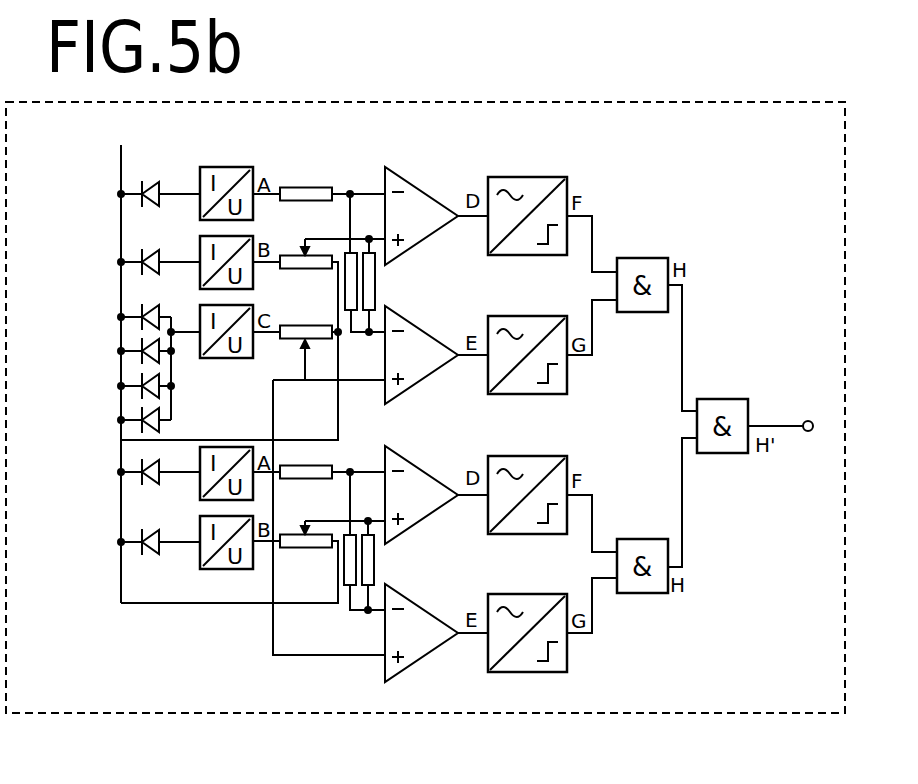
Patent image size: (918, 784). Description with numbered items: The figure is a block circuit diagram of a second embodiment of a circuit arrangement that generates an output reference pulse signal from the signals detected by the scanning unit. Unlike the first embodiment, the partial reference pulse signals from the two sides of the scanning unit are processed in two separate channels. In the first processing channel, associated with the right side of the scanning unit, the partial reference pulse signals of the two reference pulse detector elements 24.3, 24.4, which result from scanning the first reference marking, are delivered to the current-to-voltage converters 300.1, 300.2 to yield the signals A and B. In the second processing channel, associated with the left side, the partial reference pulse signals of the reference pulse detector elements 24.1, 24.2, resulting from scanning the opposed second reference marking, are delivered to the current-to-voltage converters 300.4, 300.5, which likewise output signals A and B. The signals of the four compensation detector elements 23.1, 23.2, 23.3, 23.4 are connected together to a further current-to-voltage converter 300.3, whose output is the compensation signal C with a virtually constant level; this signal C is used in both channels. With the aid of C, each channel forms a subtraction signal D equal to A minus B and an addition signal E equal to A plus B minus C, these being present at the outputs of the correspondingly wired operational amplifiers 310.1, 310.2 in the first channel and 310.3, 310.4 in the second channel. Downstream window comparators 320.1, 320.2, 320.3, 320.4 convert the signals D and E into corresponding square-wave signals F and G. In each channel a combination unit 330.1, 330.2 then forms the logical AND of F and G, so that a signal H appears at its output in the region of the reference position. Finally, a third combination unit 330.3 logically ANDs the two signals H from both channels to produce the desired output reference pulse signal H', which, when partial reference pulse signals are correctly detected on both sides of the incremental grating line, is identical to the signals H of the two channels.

The compensation detector element 23.1 is at (141, 430).
The compensation detector element 23.2 is at (141, 396).
The compensation detector element 23.3 is at (141, 329).
The compensation detector element 23.4 is at (141, 362).
The reference pulse detector element 24.1 is at (141, 554).
The reference pulse detector element 24.2 is at (141, 484).
The reference pulse detector element 24.3 is at (141, 205).
The reference pulse detector element 24.4 is at (141, 272).
The current-to-voltage converter 300.1 is at (237, 182).
The current-to-voltage converter 300.2 is at (228, 280).
The current-to-voltage converter 300.3 is at (227, 350).
The current-to-voltage converter 300.4 is at (224, 490).
The current-to-voltage converter 300.5 is at (226, 565).
The operational amplifier 310.1 is at (430, 210).
The operational amplifier 310.2 is at (428, 352).
The operational amplifier 310.3 is at (427, 492).
The operational amplifier 310.4 is at (427, 632).
The window comparator 320.1 is at (544, 187).
The window comparator 320.2 is at (543, 333).
The window comparator 320.3 is at (542, 470).
The window comparator 320.4 is at (542, 612).
The combination unit 330.1 is at (630, 270).
The combination unit 330.2 is at (625, 553).
The third combination unit 330.3 is at (729, 407).